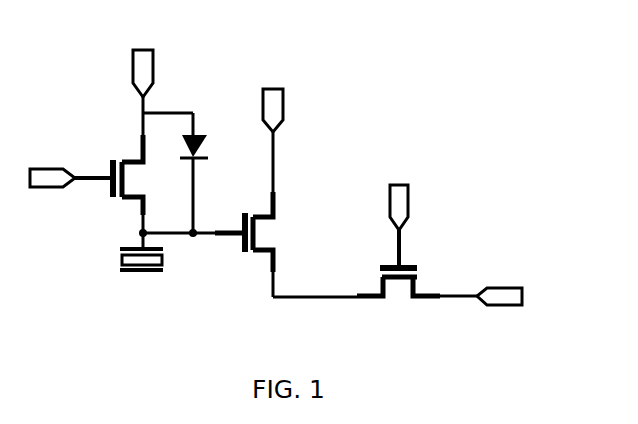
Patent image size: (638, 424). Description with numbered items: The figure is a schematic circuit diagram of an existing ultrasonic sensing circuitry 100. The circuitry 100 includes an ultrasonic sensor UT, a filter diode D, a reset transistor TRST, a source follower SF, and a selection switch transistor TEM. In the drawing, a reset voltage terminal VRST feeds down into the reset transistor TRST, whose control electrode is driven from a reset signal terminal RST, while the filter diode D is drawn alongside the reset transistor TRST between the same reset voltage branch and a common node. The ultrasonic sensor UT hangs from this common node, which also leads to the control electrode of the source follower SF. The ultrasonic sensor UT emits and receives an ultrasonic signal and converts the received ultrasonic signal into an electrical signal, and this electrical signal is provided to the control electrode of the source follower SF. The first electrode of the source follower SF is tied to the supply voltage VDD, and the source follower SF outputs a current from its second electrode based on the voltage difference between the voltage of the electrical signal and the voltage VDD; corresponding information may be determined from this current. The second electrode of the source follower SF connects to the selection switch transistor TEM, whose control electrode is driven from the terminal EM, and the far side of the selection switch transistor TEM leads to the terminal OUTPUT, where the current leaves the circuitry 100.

The ultrasonic sensing circuitry 100 is at (540, 90).
The reset voltage terminal VRST is at (144, 78).
The reset signal terminal RST is at (70, 164).
The reset transistor TRST is at (144, 184).
The filter diode D is at (188, 173).
The ultrasonic sensor UT is at (141, 269).
The source follower SF is at (285, 244).
The first electrode voltage VDD is at (272, 125).
The selection switch transistor TEM is at (417, 300).
The selection control terminal EM is at (399, 212).
The output terminal OUTPUT is at (510, 279).